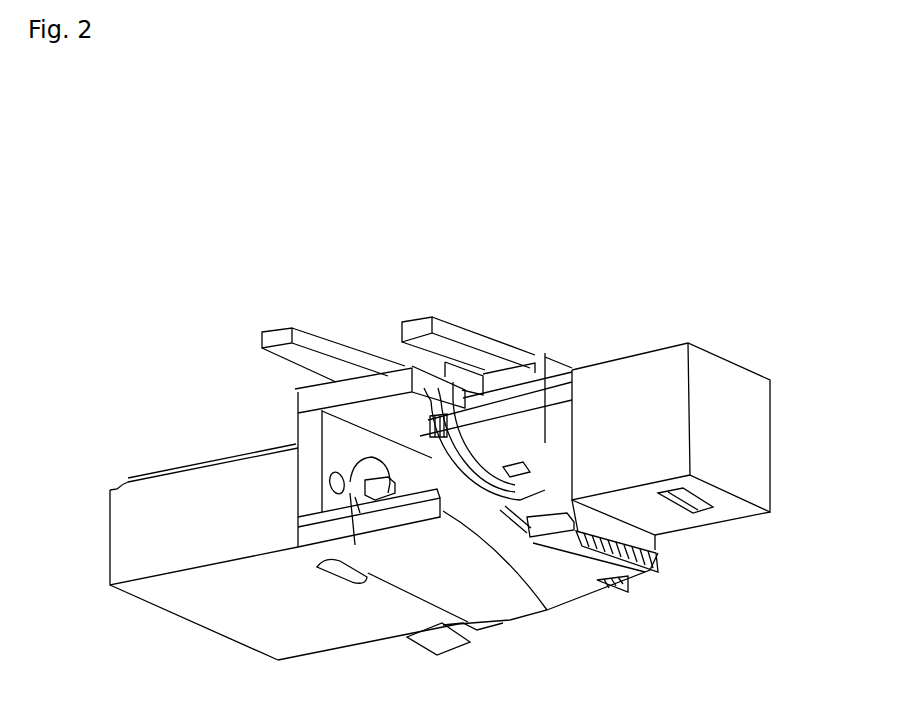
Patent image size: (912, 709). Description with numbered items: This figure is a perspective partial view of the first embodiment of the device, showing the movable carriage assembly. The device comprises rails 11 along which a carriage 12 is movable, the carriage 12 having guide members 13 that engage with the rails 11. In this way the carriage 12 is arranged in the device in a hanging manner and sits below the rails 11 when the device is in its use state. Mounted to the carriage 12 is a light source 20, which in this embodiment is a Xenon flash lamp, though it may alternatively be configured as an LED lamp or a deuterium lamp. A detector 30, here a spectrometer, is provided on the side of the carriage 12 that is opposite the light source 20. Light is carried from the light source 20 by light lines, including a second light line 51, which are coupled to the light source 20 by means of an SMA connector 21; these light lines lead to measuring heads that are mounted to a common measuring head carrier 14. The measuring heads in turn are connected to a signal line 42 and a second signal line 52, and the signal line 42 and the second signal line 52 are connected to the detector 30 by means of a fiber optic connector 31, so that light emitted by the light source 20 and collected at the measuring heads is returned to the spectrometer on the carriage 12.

The rails 11 is at (290, 328).
The carriage 12 is at (591, 600).
The guide members 13 is at (543, 355).
The measuring head carrier 14 is at (436, 347).
The light source 20 is at (736, 513).
The SMA connector 21 is at (512, 466).
The detector 30 is at (124, 492).
The fiber optic connector 31 is at (355, 545).
The signal line 42 is at (645, 565).
The second light line 51 is at (547, 610).
The second signal line 52 is at (435, 443).